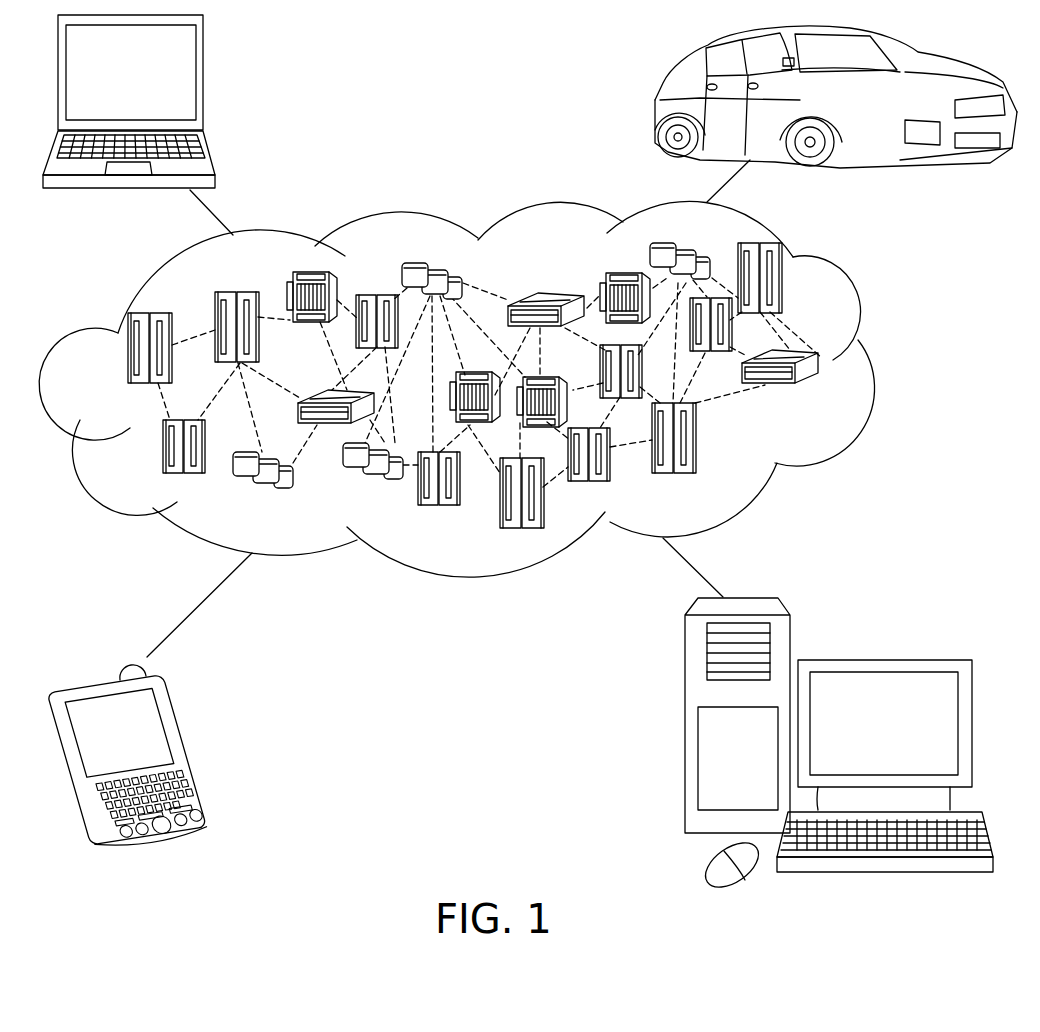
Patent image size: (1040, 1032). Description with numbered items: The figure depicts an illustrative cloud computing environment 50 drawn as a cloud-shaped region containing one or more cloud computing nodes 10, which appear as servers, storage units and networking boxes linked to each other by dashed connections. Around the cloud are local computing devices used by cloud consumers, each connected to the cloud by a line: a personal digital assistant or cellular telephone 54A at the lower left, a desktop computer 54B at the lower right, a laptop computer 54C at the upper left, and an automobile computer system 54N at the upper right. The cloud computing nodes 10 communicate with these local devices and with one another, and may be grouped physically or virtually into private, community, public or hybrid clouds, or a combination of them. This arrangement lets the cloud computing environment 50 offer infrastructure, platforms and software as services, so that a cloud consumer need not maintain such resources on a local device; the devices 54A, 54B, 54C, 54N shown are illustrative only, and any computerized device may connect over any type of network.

The cloud computing nodes 10 is at (822, 395).
The cloud computing environment 50 is at (492, 389).
The personal digital assistant (PDA) or cellular telephone 54A is at (190, 750).
The desktop computer 54B is at (882, 658).
The laptop computer 54C is at (205, 82).
The automobile computer system 54N is at (660, 103).